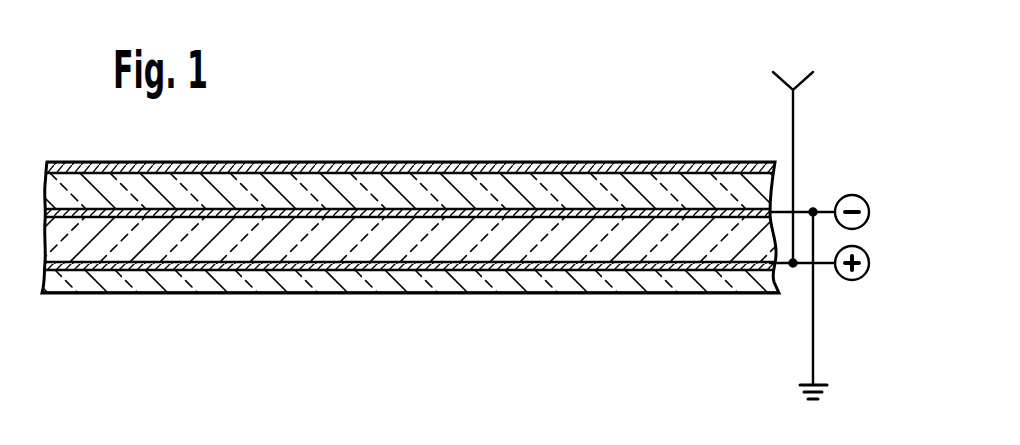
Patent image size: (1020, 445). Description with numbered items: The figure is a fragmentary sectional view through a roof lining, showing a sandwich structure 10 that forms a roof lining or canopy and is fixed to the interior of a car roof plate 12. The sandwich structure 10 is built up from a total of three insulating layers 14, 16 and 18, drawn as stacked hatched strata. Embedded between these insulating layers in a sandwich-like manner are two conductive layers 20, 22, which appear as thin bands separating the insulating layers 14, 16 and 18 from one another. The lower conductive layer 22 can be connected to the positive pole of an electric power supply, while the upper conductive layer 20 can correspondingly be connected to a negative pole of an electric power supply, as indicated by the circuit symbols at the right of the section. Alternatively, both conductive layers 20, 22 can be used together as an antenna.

The sandwich structure 10 is at (304, 155).
The car roof plate 12 is at (373, 166).
The insulating layer 14 is at (438, 192).
The insulating layer 16 is at (450, 242).
The insulating layer 18 is at (372, 278).
The upper conductive layer 20 is at (523, 213).
The lower conductive layer 22 is at (537, 268).